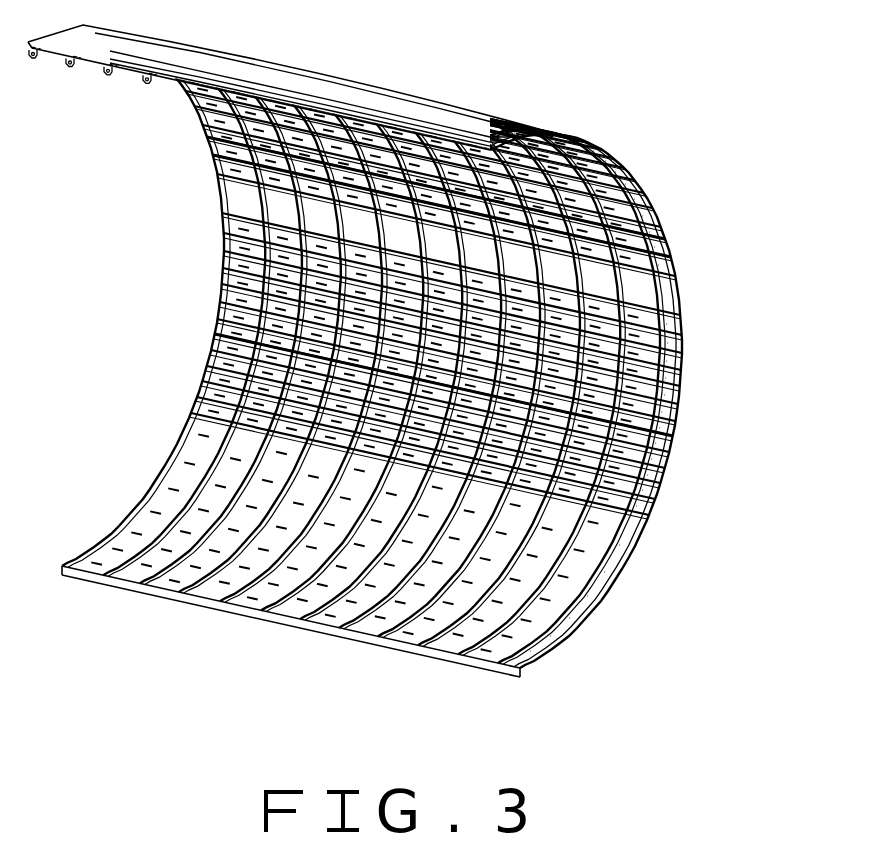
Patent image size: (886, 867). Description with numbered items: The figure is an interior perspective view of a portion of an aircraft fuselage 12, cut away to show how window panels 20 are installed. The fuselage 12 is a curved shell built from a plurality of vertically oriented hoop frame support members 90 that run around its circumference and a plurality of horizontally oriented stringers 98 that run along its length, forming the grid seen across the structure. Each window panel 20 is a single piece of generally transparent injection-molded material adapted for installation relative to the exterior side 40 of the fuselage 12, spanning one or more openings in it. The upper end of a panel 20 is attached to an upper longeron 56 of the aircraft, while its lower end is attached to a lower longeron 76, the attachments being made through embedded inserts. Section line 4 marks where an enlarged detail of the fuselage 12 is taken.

The fuselage 12 is at (404, 351).
The exterior side 40 is at (480, 127).
The upper longeron 56 is at (207, 141).
The window panel 20 is at (243, 195).
The lower longeron 76 is at (225, 247).
The hoop frame support members 90 is at (233, 328).
The stringers 98 is at (205, 385).
The line 4- 4 is at (660, 232).